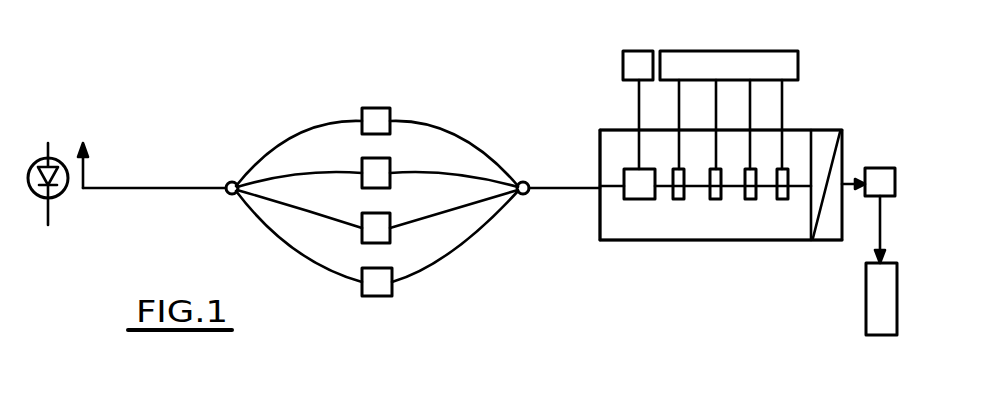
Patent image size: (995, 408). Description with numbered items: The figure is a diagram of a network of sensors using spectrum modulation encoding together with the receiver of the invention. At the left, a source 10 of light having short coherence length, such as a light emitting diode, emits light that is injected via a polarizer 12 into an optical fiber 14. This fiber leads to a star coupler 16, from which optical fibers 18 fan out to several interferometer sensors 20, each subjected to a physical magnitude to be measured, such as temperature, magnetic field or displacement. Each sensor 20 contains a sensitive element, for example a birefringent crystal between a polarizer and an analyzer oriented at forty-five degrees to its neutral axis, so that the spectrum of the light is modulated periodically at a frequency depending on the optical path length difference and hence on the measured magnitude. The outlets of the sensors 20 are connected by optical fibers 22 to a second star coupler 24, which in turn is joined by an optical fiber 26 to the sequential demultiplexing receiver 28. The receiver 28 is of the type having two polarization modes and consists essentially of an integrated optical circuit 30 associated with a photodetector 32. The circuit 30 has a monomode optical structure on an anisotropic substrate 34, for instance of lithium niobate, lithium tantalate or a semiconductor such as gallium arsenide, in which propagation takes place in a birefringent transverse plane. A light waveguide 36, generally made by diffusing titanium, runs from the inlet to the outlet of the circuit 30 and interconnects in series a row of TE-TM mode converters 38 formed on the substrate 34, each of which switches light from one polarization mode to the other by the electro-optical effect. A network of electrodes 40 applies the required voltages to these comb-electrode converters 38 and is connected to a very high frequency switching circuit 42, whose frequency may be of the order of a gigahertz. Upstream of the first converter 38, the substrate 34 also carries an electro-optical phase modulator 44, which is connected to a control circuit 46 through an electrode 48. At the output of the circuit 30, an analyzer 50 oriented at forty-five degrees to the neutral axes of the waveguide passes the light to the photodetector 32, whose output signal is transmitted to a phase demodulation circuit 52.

The source of light 10 is at (52, 200).
The polarizer 12 is at (86, 164).
The optical fiber 14 is at (162, 190).
The star coupler 16 is at (233, 195).
The optical fibers 18 is at (298, 176).
The interferometer sensors 20 is at (378, 118).
The optical fibers 22 is at (454, 178).
The star coupler 24 is at (522, 182).
The optical fiber 26 is at (576, 186).
The sequential demultiplexing receiver 28 is at (738, 250).
The integrated optical circuit 30 is at (620, 120).
The photodetector 32 is at (878, 166).
The anisotropic substrate 34 is at (612, 242).
The light waveguide 36 is at (600, 200).
The TE-TM mode converters 38 is at (782, 200).
The network of electrodes 40 is at (714, 118).
The switching circuit 42 is at (748, 64).
The phase modulator 44 is at (650, 200).
The control circuit 46 is at (632, 66).
The electrode 48 is at (639, 97).
The analyzer 50 is at (830, 128).
The phase demodulation circuit 52 is at (873, 292).